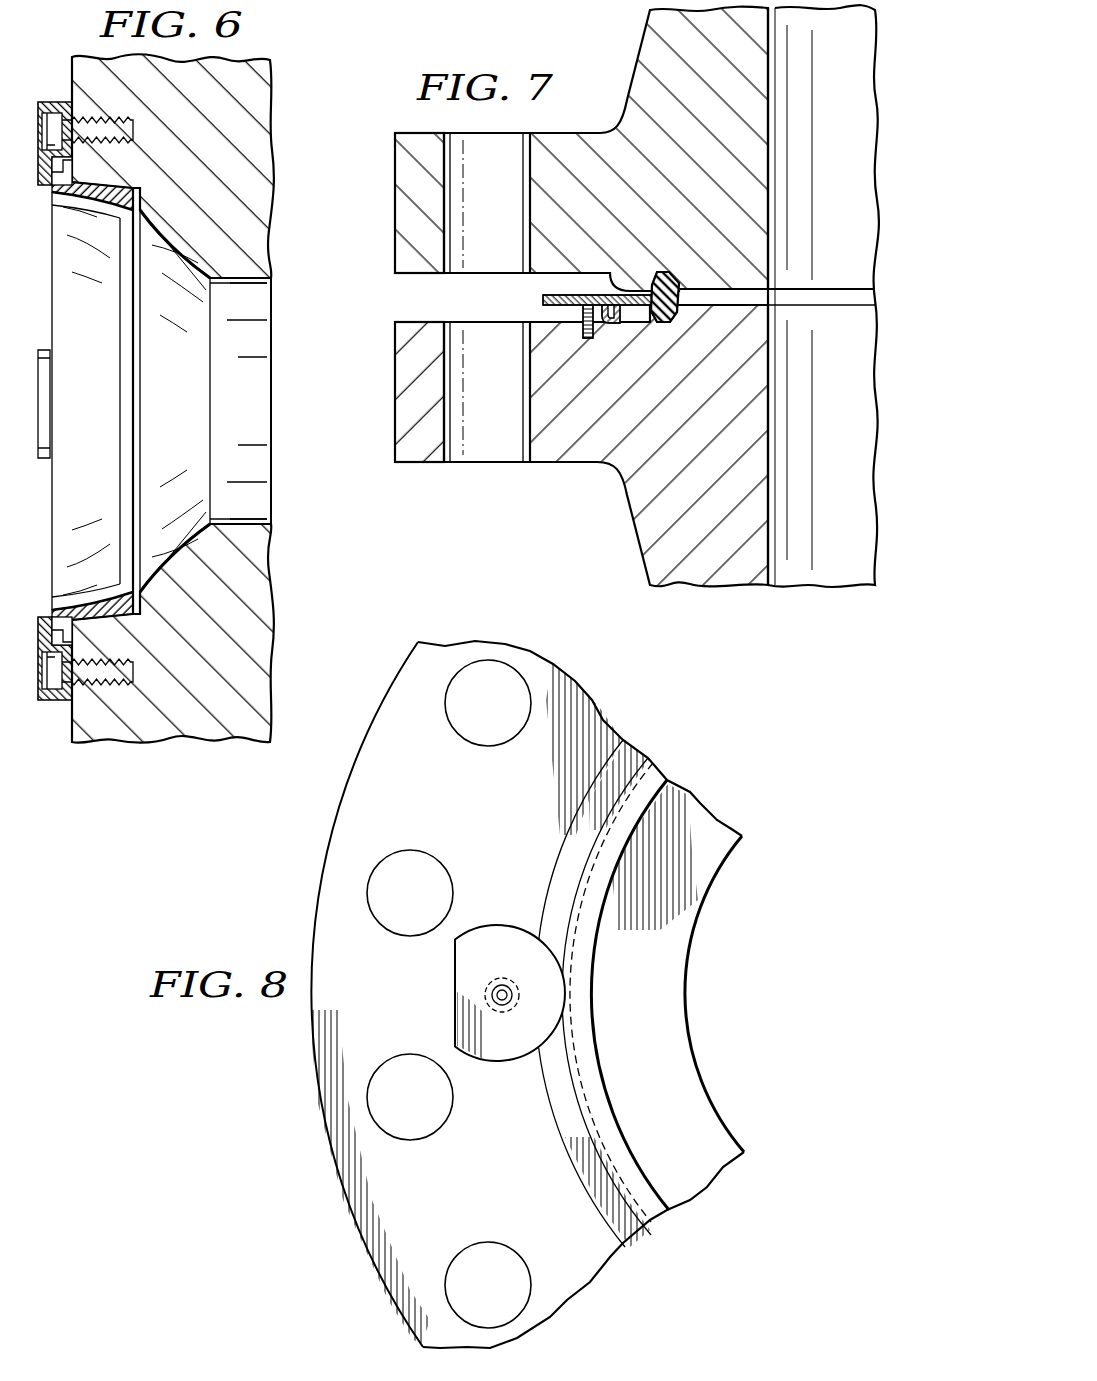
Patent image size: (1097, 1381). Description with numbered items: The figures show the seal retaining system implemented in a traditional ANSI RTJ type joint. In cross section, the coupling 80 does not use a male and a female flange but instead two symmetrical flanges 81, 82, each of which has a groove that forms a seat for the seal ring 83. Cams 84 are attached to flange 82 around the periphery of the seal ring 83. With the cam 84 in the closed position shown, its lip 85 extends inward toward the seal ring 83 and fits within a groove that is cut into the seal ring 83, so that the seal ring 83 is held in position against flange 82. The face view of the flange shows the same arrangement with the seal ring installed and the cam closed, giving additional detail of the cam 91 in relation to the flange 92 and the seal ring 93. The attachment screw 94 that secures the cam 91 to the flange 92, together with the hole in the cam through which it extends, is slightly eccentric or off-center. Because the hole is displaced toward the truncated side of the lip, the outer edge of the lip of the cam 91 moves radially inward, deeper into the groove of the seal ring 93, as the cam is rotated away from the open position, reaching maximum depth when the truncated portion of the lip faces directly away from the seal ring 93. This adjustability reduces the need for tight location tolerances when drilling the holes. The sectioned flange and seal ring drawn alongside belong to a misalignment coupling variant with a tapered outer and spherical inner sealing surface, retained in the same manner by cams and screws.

In FIG. 7, the coupling 80 is at (637, 296).
In FIG. 7, the flange 81 is at (641, 47).
In FIG. 7, the flange 82 is at (638, 540).
In FIG. 7, the seal ring 83 is at (684, 305).
In FIG. 7, the cam 84 is at (573, 316).
In FIG. 7, the lip 85 is at (610, 272).
In FIG. 8, the cam 91 is at (503, 925).
In FIG. 8, the flange 92 is at (371, 1007).
In FIG. 8, the seal ring 93 is at (595, 995).
In FIG. 8, the attachment screw 94 is at (512, 1000).